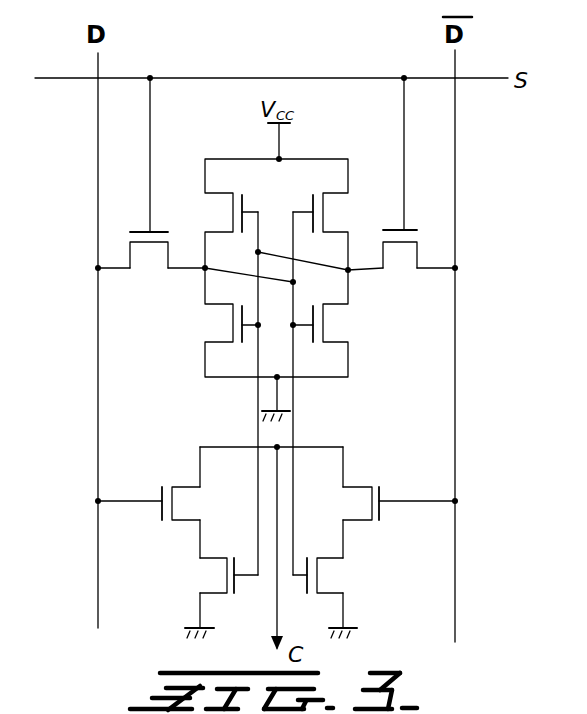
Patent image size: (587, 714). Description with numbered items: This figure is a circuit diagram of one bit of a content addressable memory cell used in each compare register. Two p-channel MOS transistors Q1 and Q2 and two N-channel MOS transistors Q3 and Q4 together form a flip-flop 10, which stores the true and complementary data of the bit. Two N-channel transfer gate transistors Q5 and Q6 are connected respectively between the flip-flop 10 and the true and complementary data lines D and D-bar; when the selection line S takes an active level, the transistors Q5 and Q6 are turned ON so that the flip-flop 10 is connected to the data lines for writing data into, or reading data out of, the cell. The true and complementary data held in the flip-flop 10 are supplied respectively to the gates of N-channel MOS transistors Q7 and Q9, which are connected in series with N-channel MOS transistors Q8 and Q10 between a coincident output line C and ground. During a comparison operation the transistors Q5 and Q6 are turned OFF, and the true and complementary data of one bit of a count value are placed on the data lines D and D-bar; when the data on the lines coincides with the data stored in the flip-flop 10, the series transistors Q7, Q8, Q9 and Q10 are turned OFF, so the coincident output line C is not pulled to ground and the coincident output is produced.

The flip-flop 10 is at (276, 365).
The p-channel MOS transistor Q1 is at (212, 206).
The p-channel MOS transistor Q2 is at (338, 208).
The N-channel MOS transistor Q3 is at (202, 320).
The N-channel MOS transistor Q4 is at (344, 322).
The N-channel transfer gate transistor Q5 is at (129, 279).
The N-channel transfer gate transistor Q6 is at (395, 278).
The N-channel MOS transistor Q7 is at (190, 496).
The N-channel MOS transistor Q8 is at (214, 574).
The N-channel MOS transistor Q9 is at (350, 492).
The N-channel MOS transistor Q10 is at (334, 576).